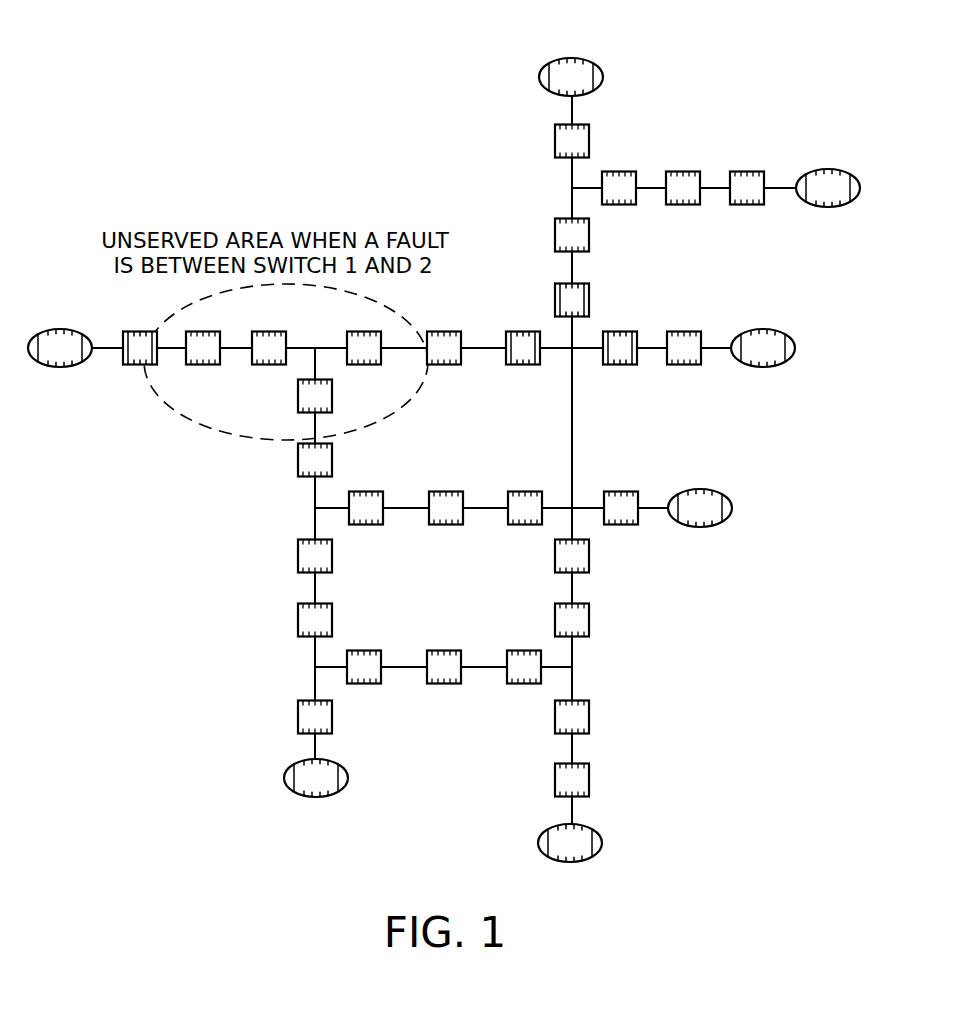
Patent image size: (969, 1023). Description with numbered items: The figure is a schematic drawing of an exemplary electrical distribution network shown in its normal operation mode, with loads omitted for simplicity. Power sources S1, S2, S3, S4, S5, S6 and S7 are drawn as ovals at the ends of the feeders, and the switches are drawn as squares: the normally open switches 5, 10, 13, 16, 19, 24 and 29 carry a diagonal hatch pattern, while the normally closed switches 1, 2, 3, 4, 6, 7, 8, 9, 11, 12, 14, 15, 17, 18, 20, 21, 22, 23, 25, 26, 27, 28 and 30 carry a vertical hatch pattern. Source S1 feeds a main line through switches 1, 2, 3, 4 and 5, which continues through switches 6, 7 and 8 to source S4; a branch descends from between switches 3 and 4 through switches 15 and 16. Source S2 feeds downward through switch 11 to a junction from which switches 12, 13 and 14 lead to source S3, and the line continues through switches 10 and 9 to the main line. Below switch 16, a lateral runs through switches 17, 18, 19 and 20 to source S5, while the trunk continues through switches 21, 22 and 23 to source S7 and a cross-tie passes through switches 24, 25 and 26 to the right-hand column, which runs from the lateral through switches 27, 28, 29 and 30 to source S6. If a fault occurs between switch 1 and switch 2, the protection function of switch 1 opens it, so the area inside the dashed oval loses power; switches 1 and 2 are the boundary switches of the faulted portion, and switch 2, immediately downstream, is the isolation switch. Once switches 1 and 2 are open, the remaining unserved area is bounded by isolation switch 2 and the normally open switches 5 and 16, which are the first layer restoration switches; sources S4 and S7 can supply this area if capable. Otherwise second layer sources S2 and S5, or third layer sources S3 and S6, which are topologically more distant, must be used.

The switch 1 is at (140, 348).
The switch 2 is at (203, 348).
The switch 3 is at (269, 348).
The switch 4 is at (364, 348).
The switch 5 is at (444, 348).
The switch 6 is at (523, 348).
The switch 7 is at (620, 348).
The switch 8 is at (684, 348).
The switch 9 is at (572, 300).
The switch 10 is at (572, 235).
The switch 11 is at (572, 141).
The switch 12 is at (619, 188).
The switch 13 is at (683, 188).
The switch 14 is at (747, 188).
The switch 15 is at (315, 396).
The switch 16 is at (315, 460).
The switch 17 is at (366, 508).
The switch 18 is at (446, 508).
The switch 19 is at (525, 508).
The switch 20 is at (621, 508).
The switch 21 is at (315, 556).
The switch 22 is at (315, 620).
The switch 23 is at (315, 717).
The switch 24 is at (364, 667).
The switch 25 is at (444, 667).
The switch 26 is at (524, 667).
The switch 27 is at (572, 556).
The switch 28 is at (572, 620).
The switch 29 is at (572, 717).
The switch 30 is at (572, 780).
The source S1 is at (60, 348).
The source S2 is at (571, 77).
The source S3 is at (828, 188).
The source S4 is at (763, 348).
The source S5 is at (700, 508).
The source S6 is at (570, 843).
The source S7 is at (316, 778).